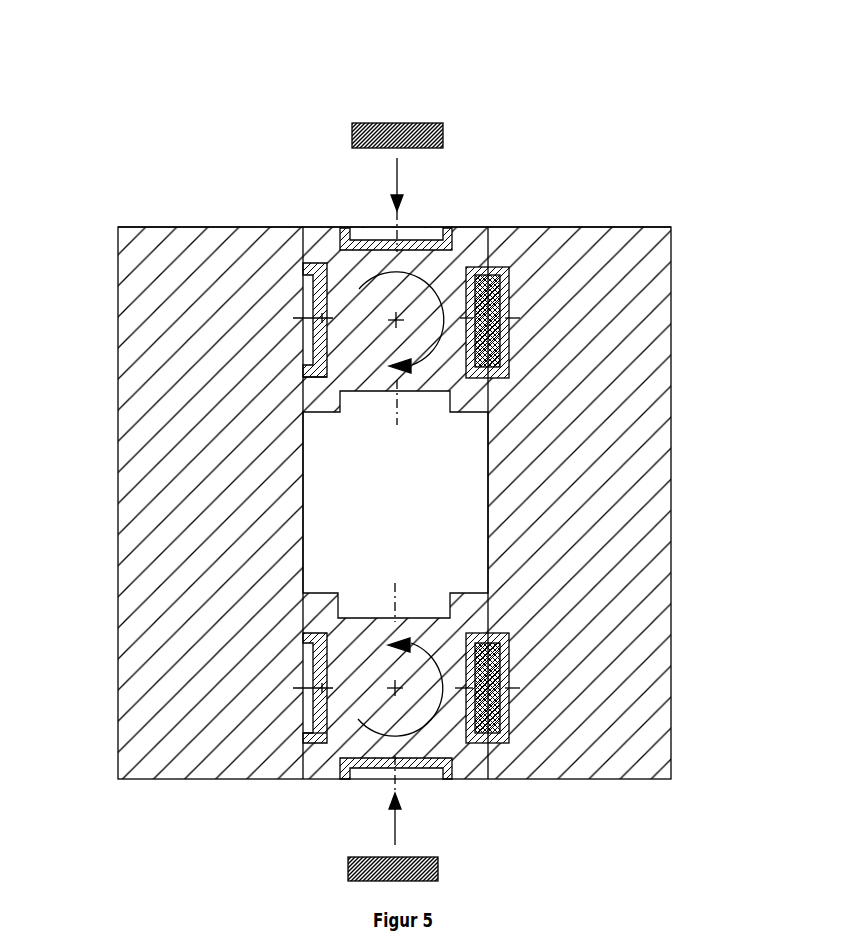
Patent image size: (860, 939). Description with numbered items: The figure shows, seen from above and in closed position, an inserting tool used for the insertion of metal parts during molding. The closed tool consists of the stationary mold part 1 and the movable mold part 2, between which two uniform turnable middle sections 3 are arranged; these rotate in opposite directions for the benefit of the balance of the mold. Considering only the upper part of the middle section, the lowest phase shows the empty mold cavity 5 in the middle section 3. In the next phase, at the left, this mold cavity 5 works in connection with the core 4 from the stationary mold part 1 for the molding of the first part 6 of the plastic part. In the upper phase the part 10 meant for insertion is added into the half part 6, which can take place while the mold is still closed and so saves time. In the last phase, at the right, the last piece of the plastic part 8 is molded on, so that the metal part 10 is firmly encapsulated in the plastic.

The stationary mold part 1 is at (208, 245).
The movable mold part 2 is at (671, 230).
The turnable middle section 3 is at (477, 234).
The core 4 is at (312, 315).
The mold cavity 5 is at (425, 398).
The first part of the plastic part 6 is at (450, 250).
The last piece of the plastic part 8 is at (508, 276).
The part meant for insertion 10 is at (443, 128).